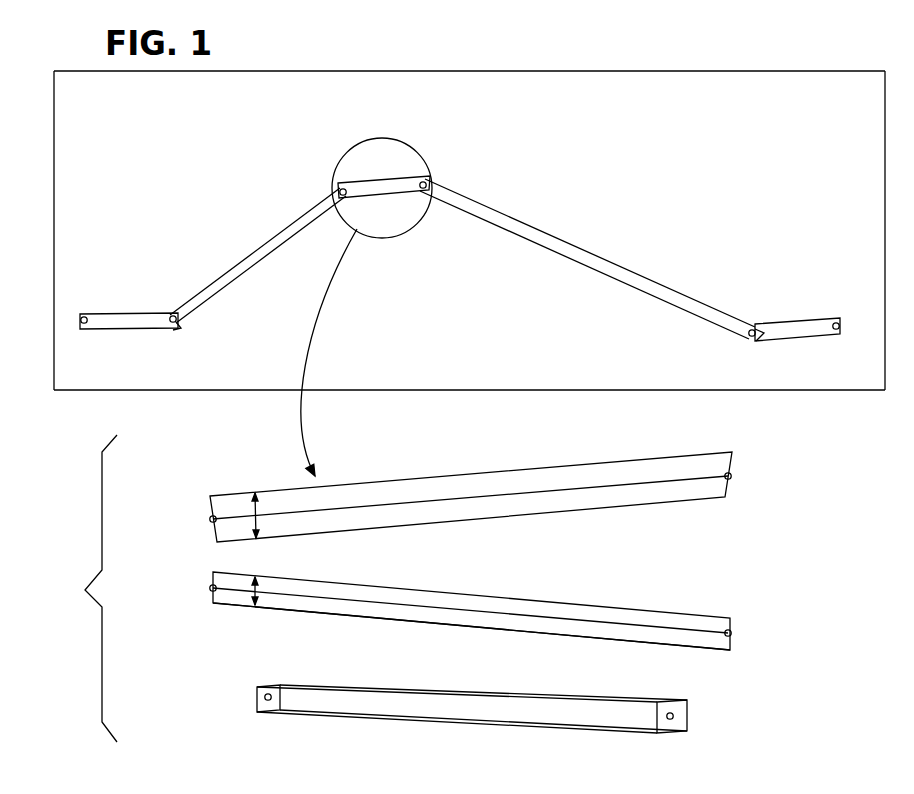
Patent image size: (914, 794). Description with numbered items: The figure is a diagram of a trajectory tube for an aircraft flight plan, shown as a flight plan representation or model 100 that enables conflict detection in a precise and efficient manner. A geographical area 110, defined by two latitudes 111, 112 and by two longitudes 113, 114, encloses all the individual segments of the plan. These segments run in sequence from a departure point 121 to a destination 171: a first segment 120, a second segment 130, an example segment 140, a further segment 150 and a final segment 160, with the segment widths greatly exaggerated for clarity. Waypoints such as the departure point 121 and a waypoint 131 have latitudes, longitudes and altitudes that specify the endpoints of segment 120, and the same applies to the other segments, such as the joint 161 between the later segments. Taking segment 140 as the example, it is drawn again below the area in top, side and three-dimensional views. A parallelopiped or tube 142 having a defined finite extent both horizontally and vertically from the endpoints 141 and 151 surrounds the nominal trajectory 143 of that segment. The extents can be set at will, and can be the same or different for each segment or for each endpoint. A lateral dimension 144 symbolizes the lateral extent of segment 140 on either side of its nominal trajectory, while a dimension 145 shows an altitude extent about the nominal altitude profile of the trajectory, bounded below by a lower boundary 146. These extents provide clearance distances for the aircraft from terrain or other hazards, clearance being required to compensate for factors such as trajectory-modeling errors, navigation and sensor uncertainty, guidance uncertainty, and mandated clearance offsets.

The flight plan representation 100 is at (450, 442).
The geographical area 110 is at (456, 222).
The latitude 111 is at (164, 390).
The latitude 112 is at (639, 72).
The longitude 113 is at (53, 108).
The longitude 114 is at (886, 113).
The segment 120 is at (141, 313).
The departure point 121 is at (86, 305).
The segment 130 is at (231, 268).
The waypoint 131 is at (173, 337).
The segment 140 is at (380, 182).
The endpoint 141 is at (262, 697).
The tube 142 is at (640, 459).
The nominal trajectory 143 is at (503, 494).
The nominal trajectory 144 is at (262, 527).
The altitude extent 145 is at (262, 598).
The lower boundary 146 is at (467, 627).
The segment 150 is at (607, 260).
The endpoint 151 is at (728, 694).
The segment 160 is at (792, 323).
The waypoint 161 is at (755, 350).
The destination 171 is at (843, 310).